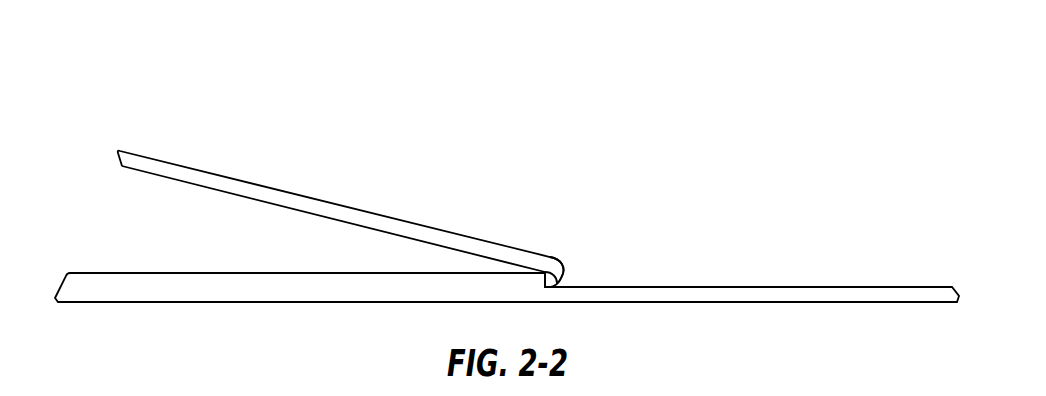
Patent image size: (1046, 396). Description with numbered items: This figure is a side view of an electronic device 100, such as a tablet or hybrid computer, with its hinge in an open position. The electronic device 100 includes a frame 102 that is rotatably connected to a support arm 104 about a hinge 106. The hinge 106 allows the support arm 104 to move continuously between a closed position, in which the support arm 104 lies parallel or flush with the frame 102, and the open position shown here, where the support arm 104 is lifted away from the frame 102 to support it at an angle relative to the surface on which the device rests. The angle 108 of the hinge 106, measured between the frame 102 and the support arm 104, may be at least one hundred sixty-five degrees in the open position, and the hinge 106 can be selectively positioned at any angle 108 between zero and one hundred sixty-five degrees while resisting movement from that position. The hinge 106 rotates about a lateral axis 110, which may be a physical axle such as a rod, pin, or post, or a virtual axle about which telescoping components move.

The electronic device 100 is at (846, 188).
The frame 102 is at (787, 293).
The support arm 104 is at (208, 180).
The hinge 106 is at (528, 223).
The angle 108 is at (590, 285).
The lateral axis 110 is at (557, 283).